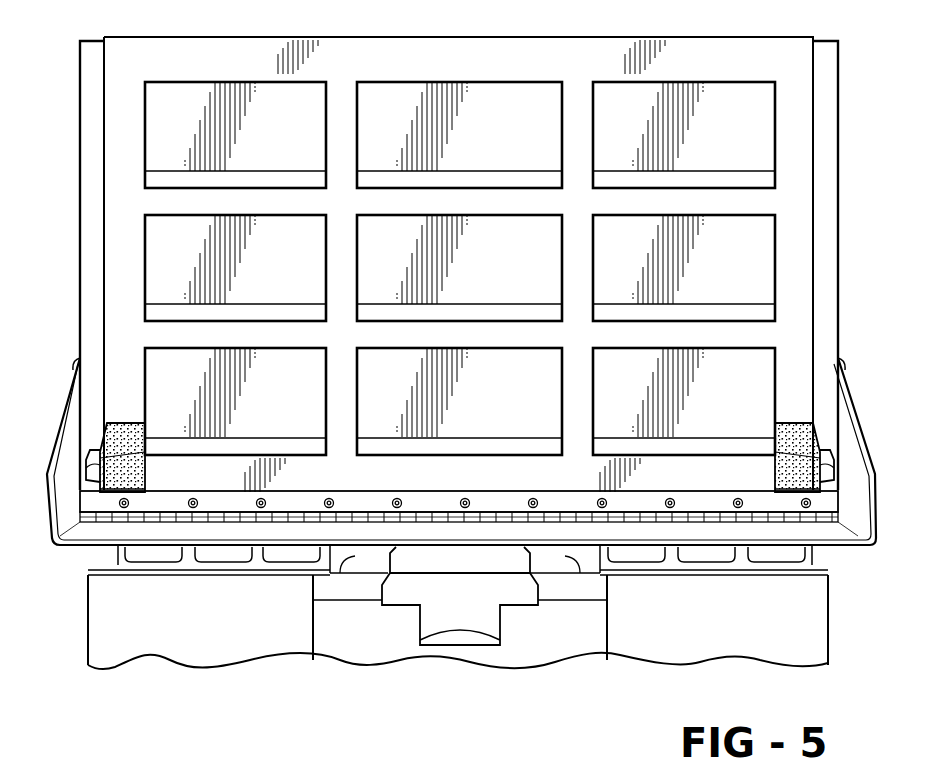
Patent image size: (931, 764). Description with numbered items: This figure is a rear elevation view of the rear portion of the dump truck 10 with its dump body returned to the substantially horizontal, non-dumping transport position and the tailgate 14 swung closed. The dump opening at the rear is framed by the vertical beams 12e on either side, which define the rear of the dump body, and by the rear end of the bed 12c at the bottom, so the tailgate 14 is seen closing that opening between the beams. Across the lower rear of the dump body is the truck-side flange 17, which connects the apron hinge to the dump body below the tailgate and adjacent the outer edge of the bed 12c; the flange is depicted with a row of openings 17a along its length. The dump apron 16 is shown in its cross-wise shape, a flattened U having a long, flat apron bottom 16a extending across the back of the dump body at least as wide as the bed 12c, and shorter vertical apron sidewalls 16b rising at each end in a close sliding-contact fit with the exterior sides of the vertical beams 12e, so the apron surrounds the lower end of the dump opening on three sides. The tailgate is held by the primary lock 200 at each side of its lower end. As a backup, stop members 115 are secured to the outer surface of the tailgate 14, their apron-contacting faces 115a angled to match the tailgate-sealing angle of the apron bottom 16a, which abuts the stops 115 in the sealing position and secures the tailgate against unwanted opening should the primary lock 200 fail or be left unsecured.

The dump truck 10 is at (65, 128).
The tailgate 14 is at (442, 60).
The vertical beams 12e is at (80, 425).
The bed 12c is at (575, 490).
The truck-side flange 17 is at (459, 446).
The rail holes 17a is at (462, 500).
The stop members 115 is at (127, 420).
The apron-contacting faces 115a is at (117, 494).
The dump apron 16 is at (548, 547).
The apron bottom 16a is at (217, 533).
The apron sidewalls 16b is at (68, 462).
The primary lock 200 is at (94, 488).